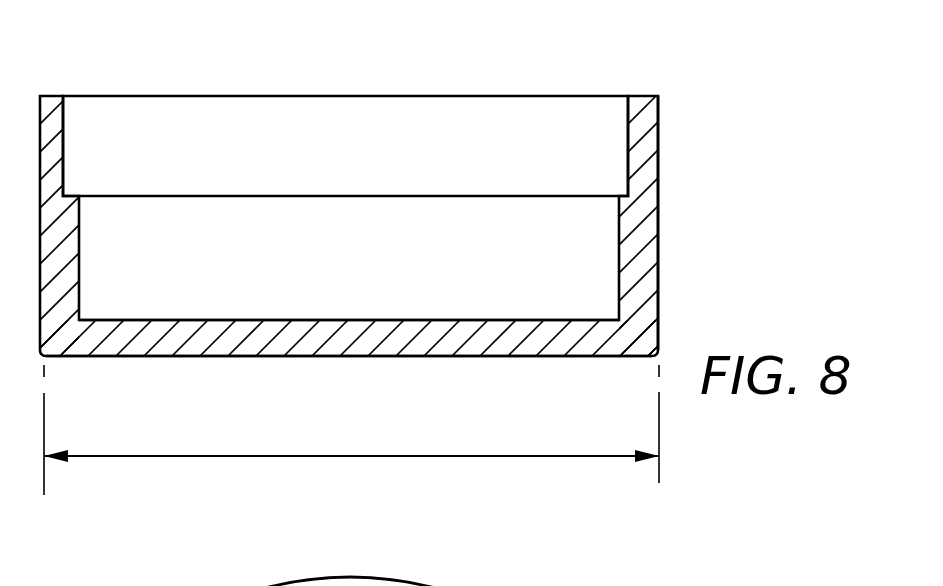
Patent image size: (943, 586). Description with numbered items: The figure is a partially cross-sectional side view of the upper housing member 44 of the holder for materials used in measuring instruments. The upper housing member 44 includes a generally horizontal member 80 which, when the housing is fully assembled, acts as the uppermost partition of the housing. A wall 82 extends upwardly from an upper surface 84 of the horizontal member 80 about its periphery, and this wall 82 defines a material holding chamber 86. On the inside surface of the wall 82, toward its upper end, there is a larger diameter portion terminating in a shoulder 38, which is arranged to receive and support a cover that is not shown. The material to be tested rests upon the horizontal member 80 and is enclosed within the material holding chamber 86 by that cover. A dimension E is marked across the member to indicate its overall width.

The upper housing member 44 is at (684, 122).
The shoulder 38 is at (78, 196).
The horizontal member 80 is at (493, 350).
The wall 82 is at (658, 244).
The upper surface 84 is at (296, 320).
The material holding chamber 86 is at (618, 233).
The width dimension E is at (360, 456).